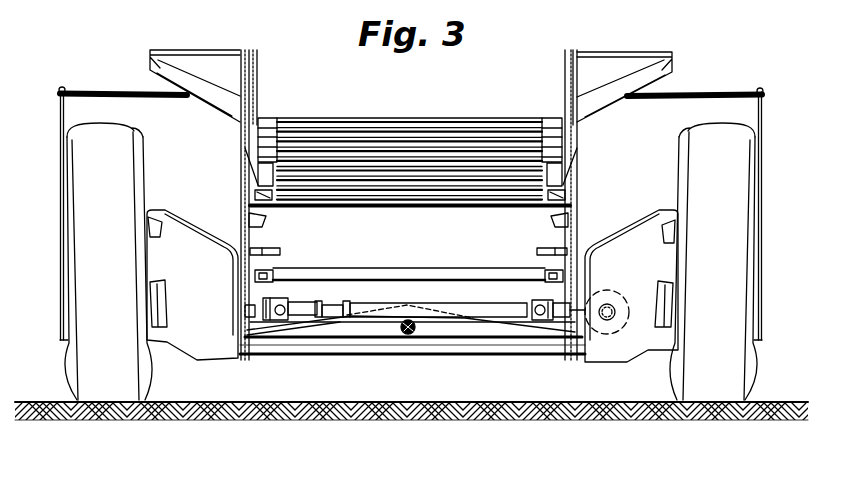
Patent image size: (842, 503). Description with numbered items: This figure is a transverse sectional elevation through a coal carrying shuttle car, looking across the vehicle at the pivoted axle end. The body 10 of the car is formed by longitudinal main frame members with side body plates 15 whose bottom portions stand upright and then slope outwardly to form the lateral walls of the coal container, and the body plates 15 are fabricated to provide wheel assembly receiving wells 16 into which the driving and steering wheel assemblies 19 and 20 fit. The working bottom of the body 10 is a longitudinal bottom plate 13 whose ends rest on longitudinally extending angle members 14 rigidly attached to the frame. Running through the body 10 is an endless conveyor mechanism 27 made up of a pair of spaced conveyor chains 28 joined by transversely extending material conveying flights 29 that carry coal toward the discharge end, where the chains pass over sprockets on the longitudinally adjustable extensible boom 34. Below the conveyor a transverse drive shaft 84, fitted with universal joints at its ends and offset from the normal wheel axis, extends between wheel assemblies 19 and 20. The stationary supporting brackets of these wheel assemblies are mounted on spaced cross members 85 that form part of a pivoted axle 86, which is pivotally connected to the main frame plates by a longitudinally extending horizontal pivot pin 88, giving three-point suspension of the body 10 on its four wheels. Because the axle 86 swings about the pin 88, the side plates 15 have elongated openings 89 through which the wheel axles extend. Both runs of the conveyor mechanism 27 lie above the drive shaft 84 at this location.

The body 10 is at (550, 78).
The bottom plate 13 is at (487, 207).
The angle members 14 is at (247, 221).
The body plates 15 is at (200, 93).
The wheel assembly receiving wells 16 is at (411, 213).
The wheel assembly 19 is at (158, 373).
The wheel assembly 20 is at (660, 377).
The endless conveyor mechanism 27 is at (334, 117).
The conveyor chains 28 is at (557, 120).
The material conveying flights 29 is at (435, 195).
The extensible frame or boom 34 is at (256, 233).
The transverse drive shaft 84 is at (503, 312).
The cross members 85 is at (348, 346).
The pivoted axle 86 is at (464, 325).
The pivot pin 88 is at (411, 334).
The elongated openings 89 is at (246, 290).